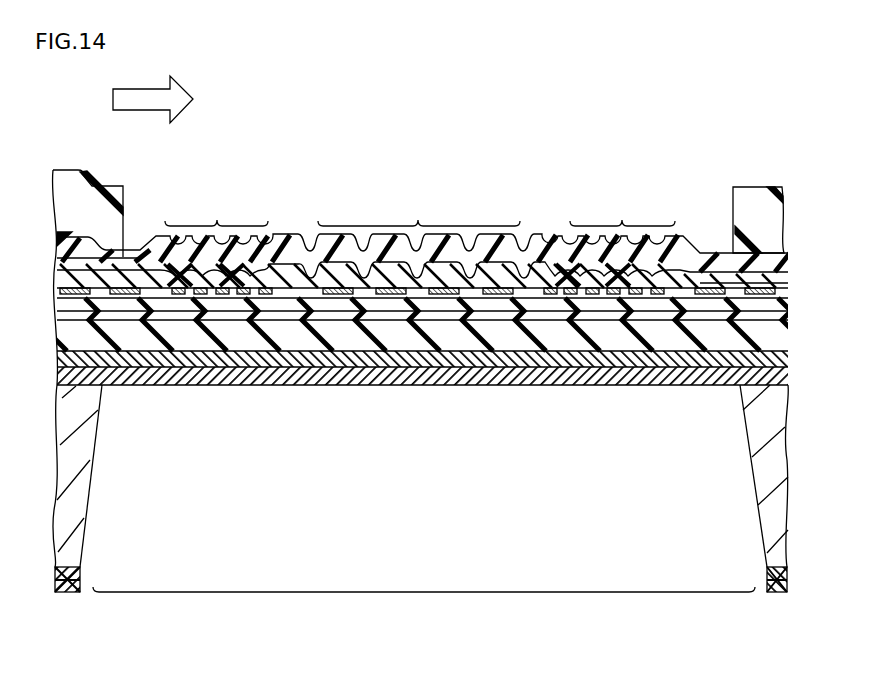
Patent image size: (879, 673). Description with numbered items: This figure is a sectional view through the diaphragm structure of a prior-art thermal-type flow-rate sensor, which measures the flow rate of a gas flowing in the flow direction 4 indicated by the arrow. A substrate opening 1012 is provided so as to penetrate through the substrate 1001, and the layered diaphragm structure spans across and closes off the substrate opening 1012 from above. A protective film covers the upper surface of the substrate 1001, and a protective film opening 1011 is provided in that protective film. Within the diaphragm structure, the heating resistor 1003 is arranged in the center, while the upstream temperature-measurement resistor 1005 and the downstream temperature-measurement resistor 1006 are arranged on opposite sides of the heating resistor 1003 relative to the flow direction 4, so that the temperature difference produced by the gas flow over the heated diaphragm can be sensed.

The flow direction 4 is at (142, 88).
The substrate 1001 is at (782, 545).
The heating resistor 1003 is at (419, 210).
The upstream temperature-measurement resistor 1005 is at (216, 211).
The downstream temperature-measurement resistor 1006 is at (622, 210).
The protective film opening 1011 is at (707, 200).
The substrate opening 1012 is at (424, 604).